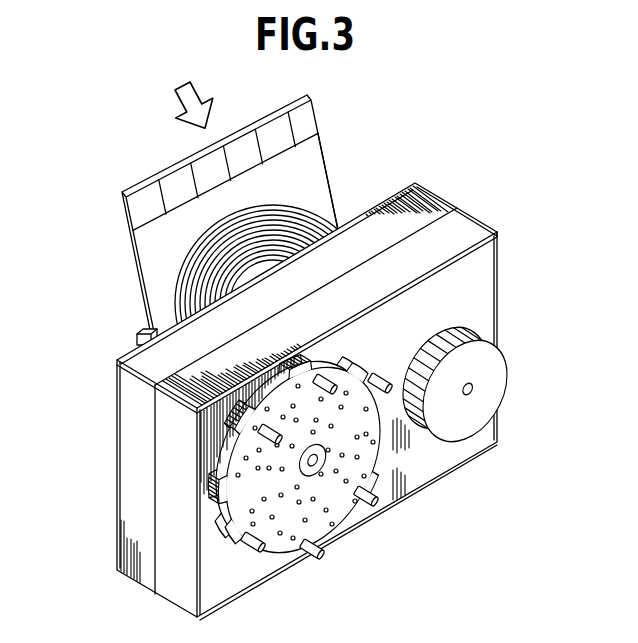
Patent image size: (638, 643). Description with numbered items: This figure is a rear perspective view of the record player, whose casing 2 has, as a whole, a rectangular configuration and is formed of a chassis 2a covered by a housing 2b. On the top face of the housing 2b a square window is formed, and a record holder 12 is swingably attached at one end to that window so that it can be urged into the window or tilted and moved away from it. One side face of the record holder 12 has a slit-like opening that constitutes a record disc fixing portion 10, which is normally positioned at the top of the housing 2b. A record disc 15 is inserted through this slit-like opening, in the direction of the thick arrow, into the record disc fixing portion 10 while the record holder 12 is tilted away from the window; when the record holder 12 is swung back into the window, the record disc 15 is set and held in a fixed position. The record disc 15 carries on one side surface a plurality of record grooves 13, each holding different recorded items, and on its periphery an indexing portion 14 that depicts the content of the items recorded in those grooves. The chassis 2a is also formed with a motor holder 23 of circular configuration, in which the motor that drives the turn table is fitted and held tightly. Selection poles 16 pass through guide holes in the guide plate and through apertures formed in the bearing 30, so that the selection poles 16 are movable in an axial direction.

The casing 2 is at (277, 399).
The chassis 2a is at (165, 528).
The housing 2b is at (120, 470).
The record disc fixing portion 10 is at (227, 212).
The record holder 12 is at (136, 338).
The record grooves 13 is at (298, 217).
The indexing portion 14 is at (308, 130).
The record disc 15 is at (323, 163).
The selection pole 16 is at (373, 502).
The motor holder 23 is at (507, 381).
The bearing 30 is at (368, 480).